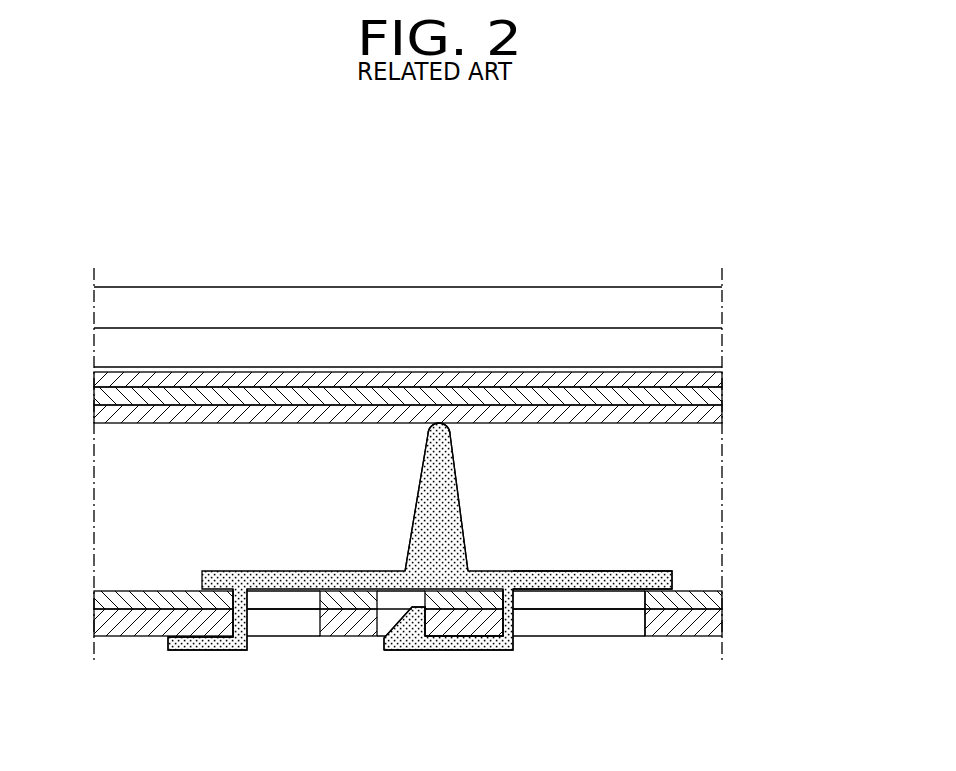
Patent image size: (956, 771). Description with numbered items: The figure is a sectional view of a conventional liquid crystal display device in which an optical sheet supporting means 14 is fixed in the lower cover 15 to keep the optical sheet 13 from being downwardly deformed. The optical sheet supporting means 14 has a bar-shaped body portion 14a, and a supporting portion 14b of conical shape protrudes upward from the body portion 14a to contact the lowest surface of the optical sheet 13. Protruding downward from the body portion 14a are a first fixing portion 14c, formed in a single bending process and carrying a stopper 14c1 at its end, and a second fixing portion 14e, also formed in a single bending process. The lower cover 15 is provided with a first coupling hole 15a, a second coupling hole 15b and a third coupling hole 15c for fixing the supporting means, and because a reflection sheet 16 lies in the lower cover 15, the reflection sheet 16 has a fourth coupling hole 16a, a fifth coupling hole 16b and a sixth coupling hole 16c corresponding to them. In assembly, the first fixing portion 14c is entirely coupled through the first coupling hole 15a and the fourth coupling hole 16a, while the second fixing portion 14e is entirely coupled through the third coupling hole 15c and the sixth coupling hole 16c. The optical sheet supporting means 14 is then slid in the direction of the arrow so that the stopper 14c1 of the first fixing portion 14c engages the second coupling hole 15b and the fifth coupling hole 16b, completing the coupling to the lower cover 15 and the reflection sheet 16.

The optical sheet 13 is at (717, 422).
The optical sheet supporting means 14 is at (472, 533).
The body portion 14a is at (535, 589).
The supporting portion 14b is at (447, 490).
The first fixing portion 14c is at (487, 643).
The stopper 14c1 is at (405, 637).
The second fixing portion 14e is at (203, 650).
The lower cover 15 is at (722, 627).
The first coupling hole 15a is at (583, 630).
The second coupling hole 15b is at (380, 622).
The third coupling hole 15c is at (265, 627).
The reflection sheet 16 is at (722, 600).
The fourth coupling hole 16a is at (622, 602).
The fifth coupling hole 16b is at (420, 599).
The sixth coupling hole 16c is at (300, 599).